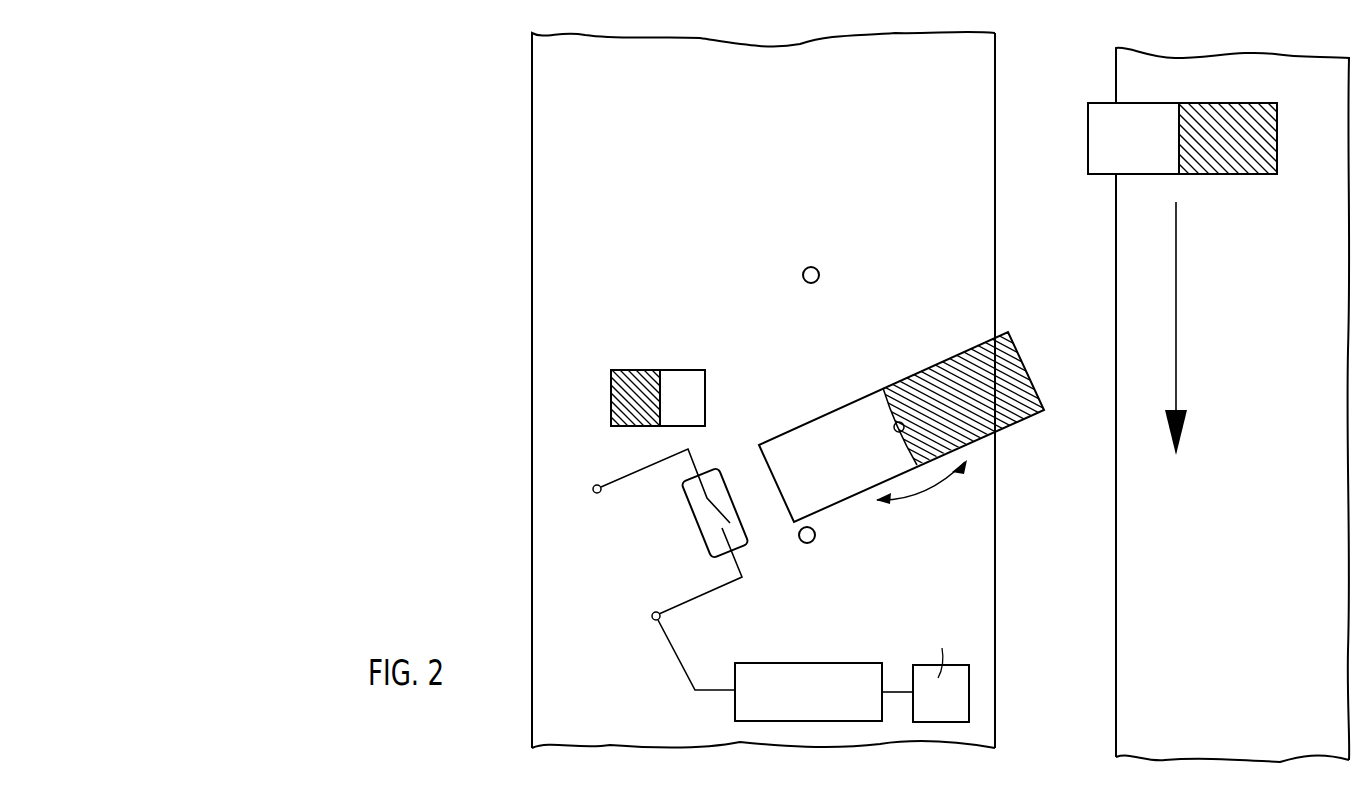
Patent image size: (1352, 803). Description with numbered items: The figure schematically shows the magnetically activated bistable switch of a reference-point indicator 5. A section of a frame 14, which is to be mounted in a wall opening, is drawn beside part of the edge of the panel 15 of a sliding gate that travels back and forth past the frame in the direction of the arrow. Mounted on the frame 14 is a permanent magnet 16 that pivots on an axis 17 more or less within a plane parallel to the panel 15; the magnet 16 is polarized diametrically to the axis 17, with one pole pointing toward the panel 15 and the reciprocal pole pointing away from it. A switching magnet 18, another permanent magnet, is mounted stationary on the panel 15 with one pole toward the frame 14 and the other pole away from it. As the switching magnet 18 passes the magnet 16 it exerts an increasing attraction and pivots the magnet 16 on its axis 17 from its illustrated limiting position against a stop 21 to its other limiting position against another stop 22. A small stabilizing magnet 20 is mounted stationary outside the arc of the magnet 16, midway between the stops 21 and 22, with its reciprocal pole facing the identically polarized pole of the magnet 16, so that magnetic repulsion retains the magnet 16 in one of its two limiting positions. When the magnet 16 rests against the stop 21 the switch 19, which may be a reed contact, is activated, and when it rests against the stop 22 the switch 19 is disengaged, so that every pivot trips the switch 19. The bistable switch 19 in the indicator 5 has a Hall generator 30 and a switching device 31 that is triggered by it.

The reference-point indicator 5 is at (462, 401).
The frame 14 is at (763, 390).
The panel 15 is at (1233, 405).
The permanent magnet 16 is at (1013, 410).
The axis 17 is at (898, 422).
The switching magnet 18 is at (1152, 163).
The switch 19 is at (676, 530).
The stabilizing magnet 20 is at (670, 382).
The stop 21 is at (814, 538).
The stop 22 is at (812, 274).
The Hall generator 30 is at (790, 663).
The switching device 31 is at (969, 690).